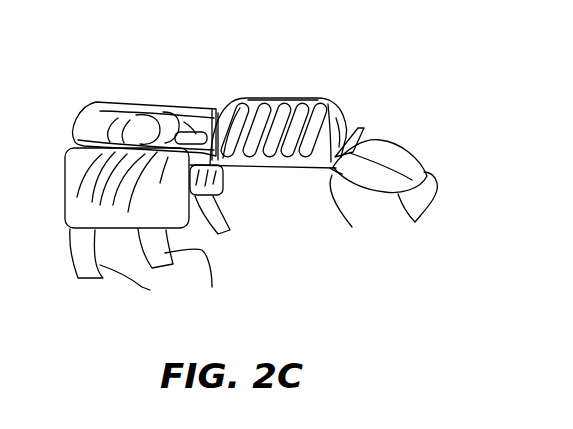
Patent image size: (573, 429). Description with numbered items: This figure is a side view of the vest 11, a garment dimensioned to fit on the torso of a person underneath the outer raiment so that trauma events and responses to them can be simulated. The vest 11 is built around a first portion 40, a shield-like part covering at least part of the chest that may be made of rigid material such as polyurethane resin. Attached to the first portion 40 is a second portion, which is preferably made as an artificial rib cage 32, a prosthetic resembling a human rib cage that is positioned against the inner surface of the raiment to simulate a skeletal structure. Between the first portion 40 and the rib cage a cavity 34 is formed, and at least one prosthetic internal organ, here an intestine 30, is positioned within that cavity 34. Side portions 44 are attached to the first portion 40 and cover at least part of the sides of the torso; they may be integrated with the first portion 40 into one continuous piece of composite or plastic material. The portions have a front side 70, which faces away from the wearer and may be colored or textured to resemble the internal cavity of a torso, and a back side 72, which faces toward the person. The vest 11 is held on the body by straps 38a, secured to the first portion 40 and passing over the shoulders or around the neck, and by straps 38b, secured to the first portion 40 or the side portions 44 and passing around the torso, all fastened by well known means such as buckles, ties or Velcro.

The vest 11 is at (345, 113).
The intestine 30 is at (120, 112).
The artificial rib cage 32 is at (284, 98).
The cavity 34 is at (195, 122).
The straps 38a is at (413, 214).
The straps 38b is at (150, 290).
The first portion 40 is at (300, 172).
The side portions 44 is at (65, 193).
The front side 70 is at (242, 98).
The back side 72 is at (335, 176).